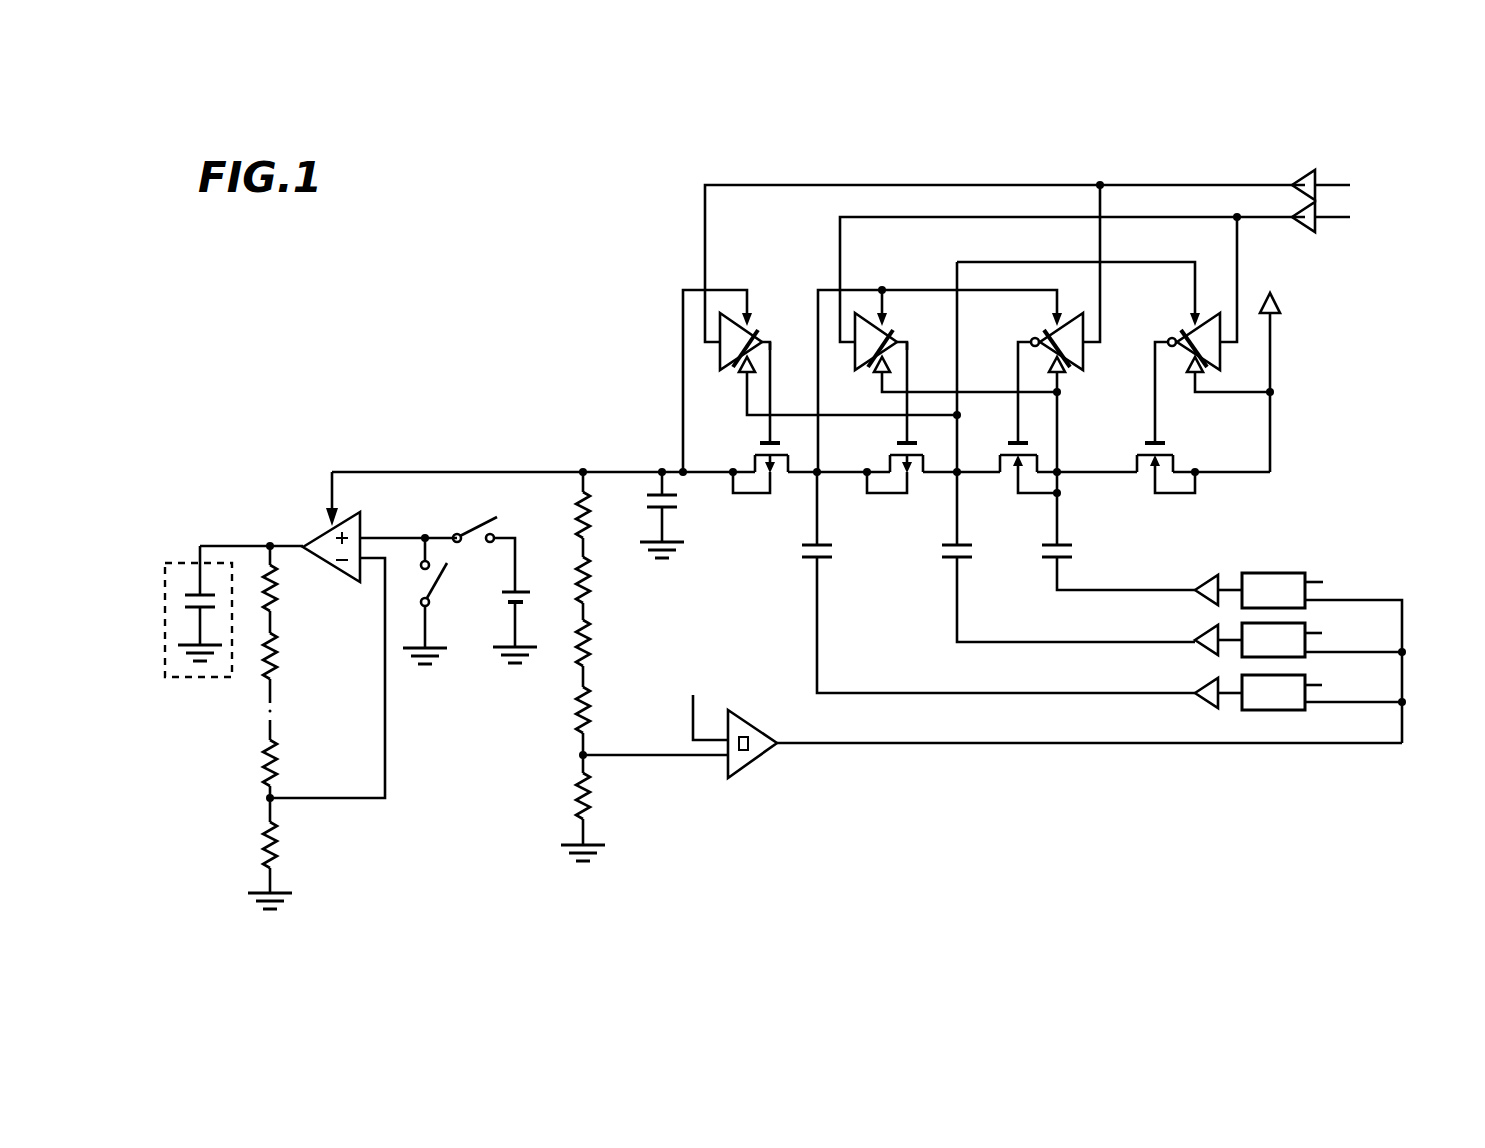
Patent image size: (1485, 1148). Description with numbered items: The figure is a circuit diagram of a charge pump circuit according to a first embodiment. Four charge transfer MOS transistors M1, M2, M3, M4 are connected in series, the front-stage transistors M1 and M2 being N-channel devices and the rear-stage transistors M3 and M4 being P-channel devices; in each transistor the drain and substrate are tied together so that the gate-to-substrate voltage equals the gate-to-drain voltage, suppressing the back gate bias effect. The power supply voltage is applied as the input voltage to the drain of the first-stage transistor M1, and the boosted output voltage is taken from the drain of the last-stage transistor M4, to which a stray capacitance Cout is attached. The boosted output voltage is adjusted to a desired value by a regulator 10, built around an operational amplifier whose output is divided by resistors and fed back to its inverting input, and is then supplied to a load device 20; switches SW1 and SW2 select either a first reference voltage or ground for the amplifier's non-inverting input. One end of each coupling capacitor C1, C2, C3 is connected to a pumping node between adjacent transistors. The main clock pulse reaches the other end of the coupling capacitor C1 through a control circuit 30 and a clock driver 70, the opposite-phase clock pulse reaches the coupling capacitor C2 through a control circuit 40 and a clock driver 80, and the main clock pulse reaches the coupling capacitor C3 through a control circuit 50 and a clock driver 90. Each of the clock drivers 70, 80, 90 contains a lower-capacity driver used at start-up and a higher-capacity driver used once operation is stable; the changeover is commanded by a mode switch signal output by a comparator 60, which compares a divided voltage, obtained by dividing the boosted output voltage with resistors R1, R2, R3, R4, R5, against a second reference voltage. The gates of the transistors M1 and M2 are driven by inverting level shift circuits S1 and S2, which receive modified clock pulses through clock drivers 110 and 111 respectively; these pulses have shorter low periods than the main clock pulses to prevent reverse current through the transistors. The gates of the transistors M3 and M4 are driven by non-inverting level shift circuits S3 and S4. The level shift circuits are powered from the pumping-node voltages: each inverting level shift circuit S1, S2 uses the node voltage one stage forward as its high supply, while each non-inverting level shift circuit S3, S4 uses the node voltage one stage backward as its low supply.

The regulator 10 is at (320, 530).
The load device 20 is at (195, 678).
The control circuit 30 is at (1278, 572).
The control circuit 40 is at (1253, 650).
The control circuit 50 is at (1283, 708).
The comparator 60 is at (750, 778).
The clock driver 70 is at (1202, 578).
The clock driver 80 is at (1202, 629).
The clock driver 90 is at (1202, 682).
The clock driver 110 is at (1305, 231).
The clock driver 111 is at (1298, 177).
The inverting level shift circuit S1 is at (1185, 333).
The inverting level shift circuit S2 is at (1048, 333).
The non-inverting level shift circuit S3 is at (896, 332).
The non-inverting level shift circuit S4 is at (764, 332).
The charge transfer MOS transistor M1 is at (1143, 448).
The charge transfer MOS transistor M2 is at (1003, 447).
The charge transfer MOS transistor M3 is at (893, 442).
The charge transfer MOS transistor M4 is at (728, 442).
The coupling capacitor C1 is at (1118, 541).
The coupling capacitor C2 is at (1068, 557).
The coupling capacitor C3 is at (998, 582).
The stray capacitance Cout is at (691, 515).
The resistor R1 is at (603, 515).
The resistor R2 is at (603, 580).
The resistor R3 is at (603, 644).
The resistor R4 is at (603, 710).
The resistor R5 is at (603, 796).
The switch SW1 is at (467, 525).
The switch SW2 is at (445, 580).